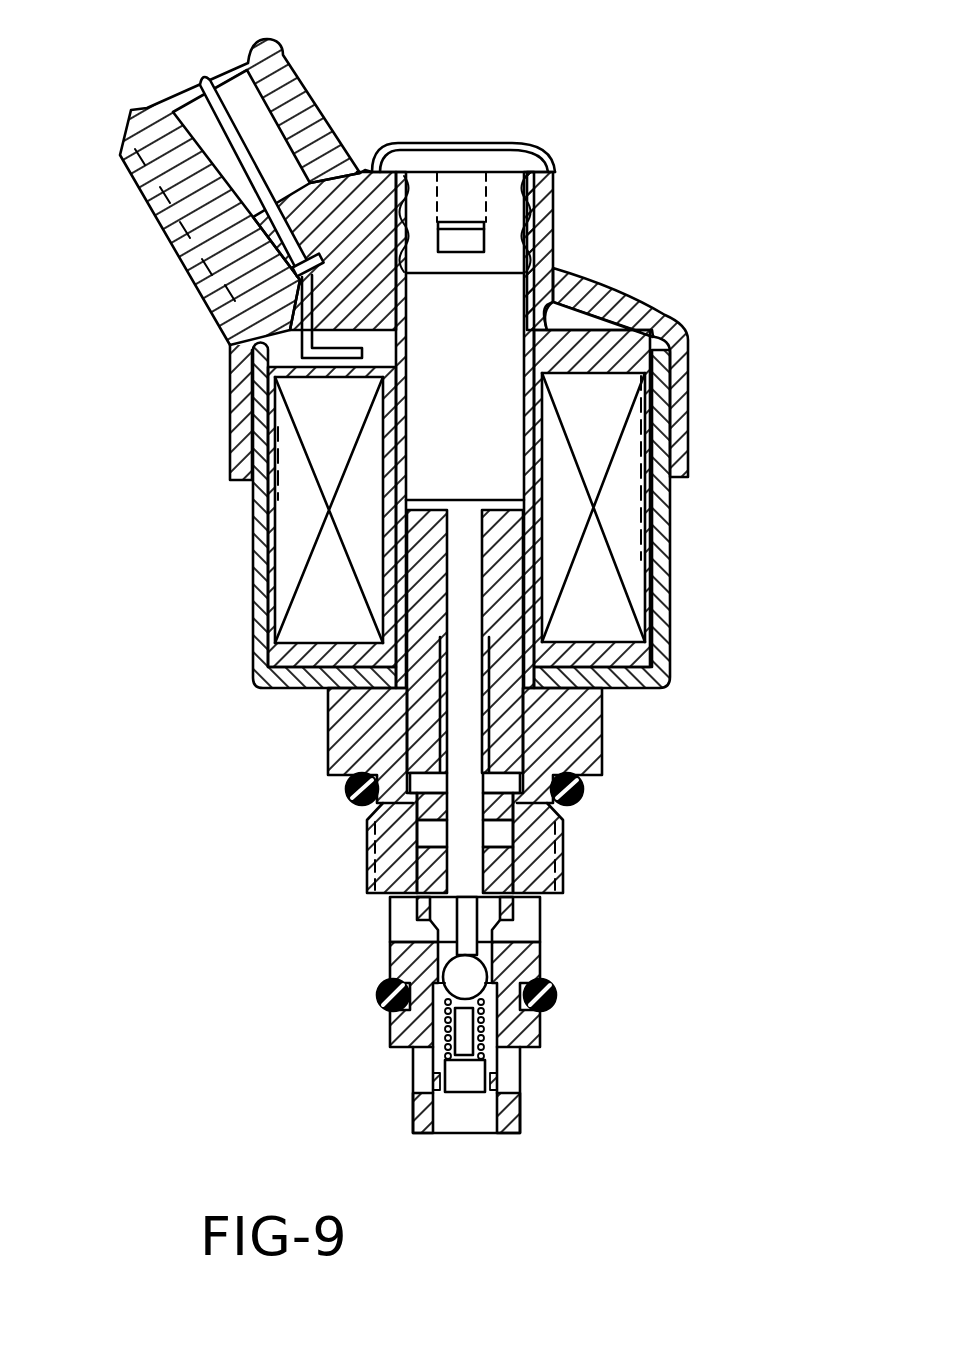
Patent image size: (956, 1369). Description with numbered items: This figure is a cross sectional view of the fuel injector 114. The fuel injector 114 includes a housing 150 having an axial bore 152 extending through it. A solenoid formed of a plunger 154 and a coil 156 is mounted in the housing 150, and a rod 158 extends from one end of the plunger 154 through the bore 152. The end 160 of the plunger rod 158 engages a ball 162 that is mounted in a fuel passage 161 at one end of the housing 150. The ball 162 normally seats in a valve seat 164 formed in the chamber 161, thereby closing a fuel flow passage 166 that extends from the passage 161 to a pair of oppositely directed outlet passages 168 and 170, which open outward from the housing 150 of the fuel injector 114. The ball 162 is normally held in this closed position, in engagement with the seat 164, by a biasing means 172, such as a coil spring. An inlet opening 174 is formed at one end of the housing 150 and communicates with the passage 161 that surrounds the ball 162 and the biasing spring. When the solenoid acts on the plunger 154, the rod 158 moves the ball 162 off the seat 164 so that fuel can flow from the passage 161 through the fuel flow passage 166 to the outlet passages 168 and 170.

The fuel injector 114 is at (416, 140).
The housing 150 is at (318, 753).
The axial bore 152 is at (478, 805).
The plunger 154 is at (500, 313).
The coil 156 is at (632, 462).
The rod 158 is at (468, 604).
The end of the plunger rod 160 is at (473, 953).
The fuel passage 161 is at (503, 1040).
The ball 162 is at (477, 977).
The valve seat 164 is at (437, 970).
The fuel flow passage 166 is at (477, 928).
The outlet passage 168 is at (548, 907).
The outlet passage 170 is at (387, 905).
The biasing means 172 is at (427, 1026).
The inlet opening 174 is at (493, 1103).